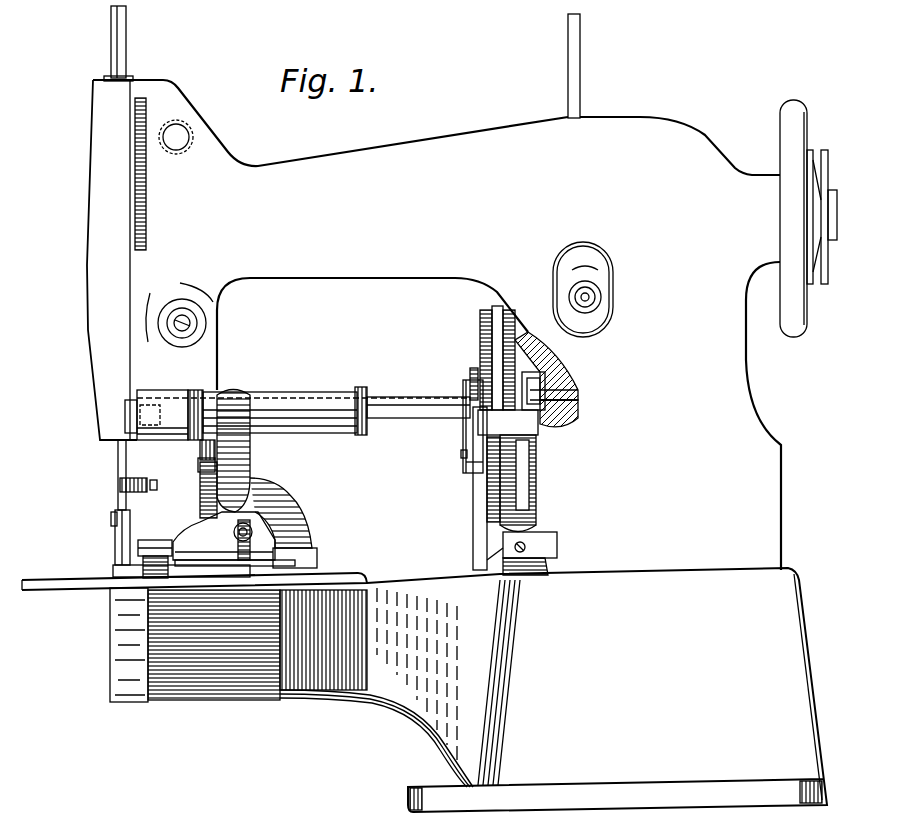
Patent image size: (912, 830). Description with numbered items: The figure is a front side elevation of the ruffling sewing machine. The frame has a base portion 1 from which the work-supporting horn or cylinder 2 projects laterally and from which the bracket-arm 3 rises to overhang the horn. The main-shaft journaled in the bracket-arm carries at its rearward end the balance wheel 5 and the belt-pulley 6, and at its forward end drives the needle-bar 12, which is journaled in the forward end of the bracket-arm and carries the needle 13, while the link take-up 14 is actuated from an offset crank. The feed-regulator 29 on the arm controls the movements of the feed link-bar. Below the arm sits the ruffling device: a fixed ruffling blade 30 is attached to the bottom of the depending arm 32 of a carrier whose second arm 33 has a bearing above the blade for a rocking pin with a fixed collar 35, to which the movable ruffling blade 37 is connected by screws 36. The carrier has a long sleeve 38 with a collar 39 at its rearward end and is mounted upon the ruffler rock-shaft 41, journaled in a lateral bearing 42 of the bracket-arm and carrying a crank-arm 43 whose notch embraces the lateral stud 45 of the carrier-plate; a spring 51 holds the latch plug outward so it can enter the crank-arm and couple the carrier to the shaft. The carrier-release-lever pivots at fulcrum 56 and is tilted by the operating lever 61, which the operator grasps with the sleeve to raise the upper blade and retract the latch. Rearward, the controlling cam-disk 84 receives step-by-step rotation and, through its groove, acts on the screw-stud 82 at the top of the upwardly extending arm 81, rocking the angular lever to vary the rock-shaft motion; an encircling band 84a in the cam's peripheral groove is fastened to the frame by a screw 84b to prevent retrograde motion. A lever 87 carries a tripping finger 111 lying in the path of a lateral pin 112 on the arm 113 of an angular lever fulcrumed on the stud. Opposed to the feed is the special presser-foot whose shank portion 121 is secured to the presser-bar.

The base portion 1 is at (424, 690).
The work-supporting horn or cylinder 2 is at (330, 690).
The bracket-arm 3 is at (434, 292).
The balance wheel 5 is at (780, 131).
The belt-pulley 6 is at (814, 160).
The needle-bar 12 is at (128, 20).
The needle 13 is at (115, 540).
The link take-up 14 is at (146, 121).
The feed-regulator 29 is at (600, 290).
The fixed ruffling blade 30 is at (235, 558).
The depending arm 32 is at (303, 540).
The second arm 33 is at (224, 536).
The fixed collar 35 is at (152, 540).
The screws 36 is at (167, 572).
The movable ruffling blade 37 is at (113, 568).
The sleeve 38 is at (295, 393).
The collar or enlargement 39 is at (361, 388).
The ruffler rock-shaft 41 is at (398, 398).
The lateral bearing 42 is at (167, 394).
The crank-arm 43 is at (198, 448).
The lateral stud 45 is at (198, 463).
The spring 51 is at (252, 540).
The fulcrum 56 is at (278, 498).
The operating lever 61 is at (250, 443).
The upwardly extending arm 81 is at (475, 512).
The screw-stud 82 is at (468, 396).
The controlling cam-disk 84 is at (496, 372).
The encircling band 84a is at (500, 307).
The screw 84b is at (540, 536).
The lever 87 is at (525, 457).
The tripping finger 111 is at (475, 468).
The lateral pin 112 is at (461, 455).
The arm 113 is at (466, 436).
The shank portion 121 is at (113, 530).